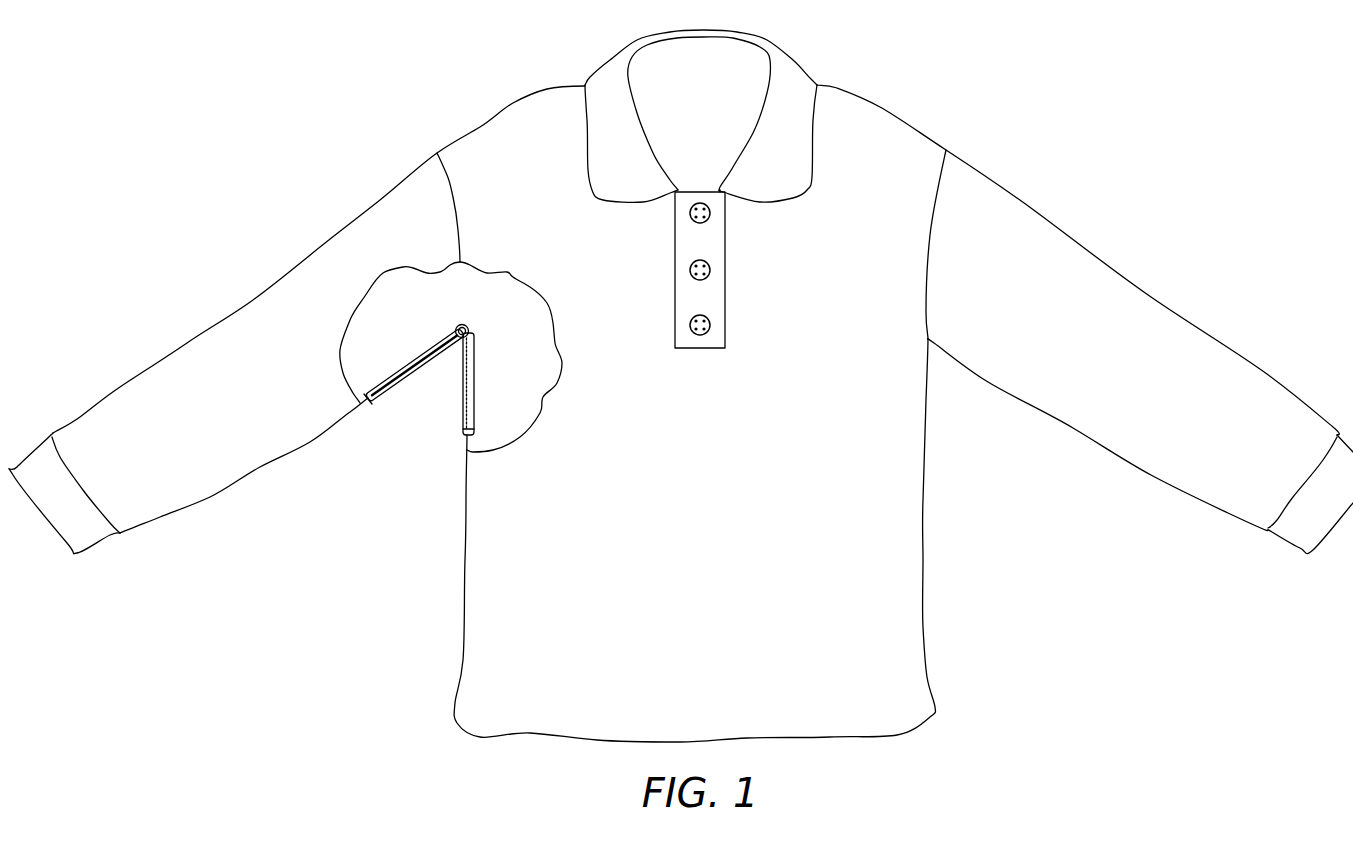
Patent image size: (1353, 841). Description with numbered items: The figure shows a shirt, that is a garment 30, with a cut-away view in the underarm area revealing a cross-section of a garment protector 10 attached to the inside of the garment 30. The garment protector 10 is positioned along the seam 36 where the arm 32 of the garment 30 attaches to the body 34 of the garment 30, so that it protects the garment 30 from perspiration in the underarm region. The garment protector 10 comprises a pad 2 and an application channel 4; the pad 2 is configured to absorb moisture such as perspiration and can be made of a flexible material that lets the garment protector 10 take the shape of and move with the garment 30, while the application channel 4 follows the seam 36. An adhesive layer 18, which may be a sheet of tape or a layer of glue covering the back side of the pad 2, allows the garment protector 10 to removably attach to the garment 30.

The garment 30 is at (681, 386).
The arm 32 is at (197, 363).
The body 34 is at (487, 571).
The seam 36 is at (453, 197).
The garment protector 10 is at (432, 355).
The pad 2 is at (465, 366).
The application channel 4 is at (462, 328).
The adhesive layer 18 is at (387, 388).